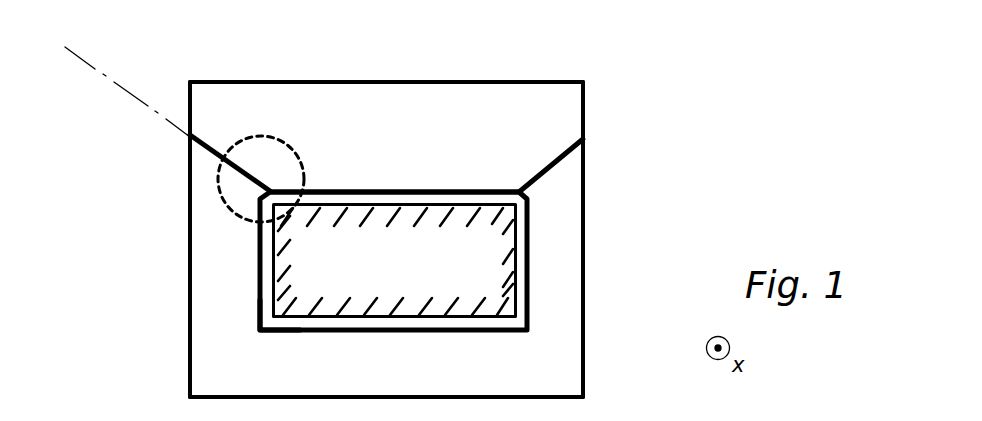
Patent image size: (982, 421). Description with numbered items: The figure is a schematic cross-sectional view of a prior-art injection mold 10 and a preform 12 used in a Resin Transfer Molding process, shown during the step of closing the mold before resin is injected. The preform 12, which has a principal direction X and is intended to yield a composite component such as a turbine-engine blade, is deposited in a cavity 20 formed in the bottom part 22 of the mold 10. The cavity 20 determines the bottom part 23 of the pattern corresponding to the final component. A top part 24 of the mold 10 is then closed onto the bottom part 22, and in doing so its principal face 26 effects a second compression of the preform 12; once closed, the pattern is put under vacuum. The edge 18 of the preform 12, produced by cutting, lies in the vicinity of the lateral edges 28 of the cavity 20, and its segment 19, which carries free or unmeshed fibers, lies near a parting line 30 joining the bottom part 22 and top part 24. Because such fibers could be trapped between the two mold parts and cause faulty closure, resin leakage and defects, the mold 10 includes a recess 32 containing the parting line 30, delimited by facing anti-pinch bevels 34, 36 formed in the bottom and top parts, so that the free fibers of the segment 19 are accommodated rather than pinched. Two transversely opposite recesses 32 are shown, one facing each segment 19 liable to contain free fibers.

The injection mold 10 is at (588, 229).
The preform 12 is at (395, 261).
The edge 18 is at (272, 267).
The segment 19 is at (278, 190).
The cavity 20 is at (517, 322).
The bottom part 22 is at (548, 372).
The bottom part of a pattern 23 is at (266, 333).
The top part 24 is at (550, 112).
The principal face 26 is at (438, 192).
The lateral edges 28 is at (260, 204).
The parting line 30 is at (86, 62).
The recess 32 is at (270, 187).
The bevel 34 is at (254, 183).
The bevel 36 is at (228, 193).